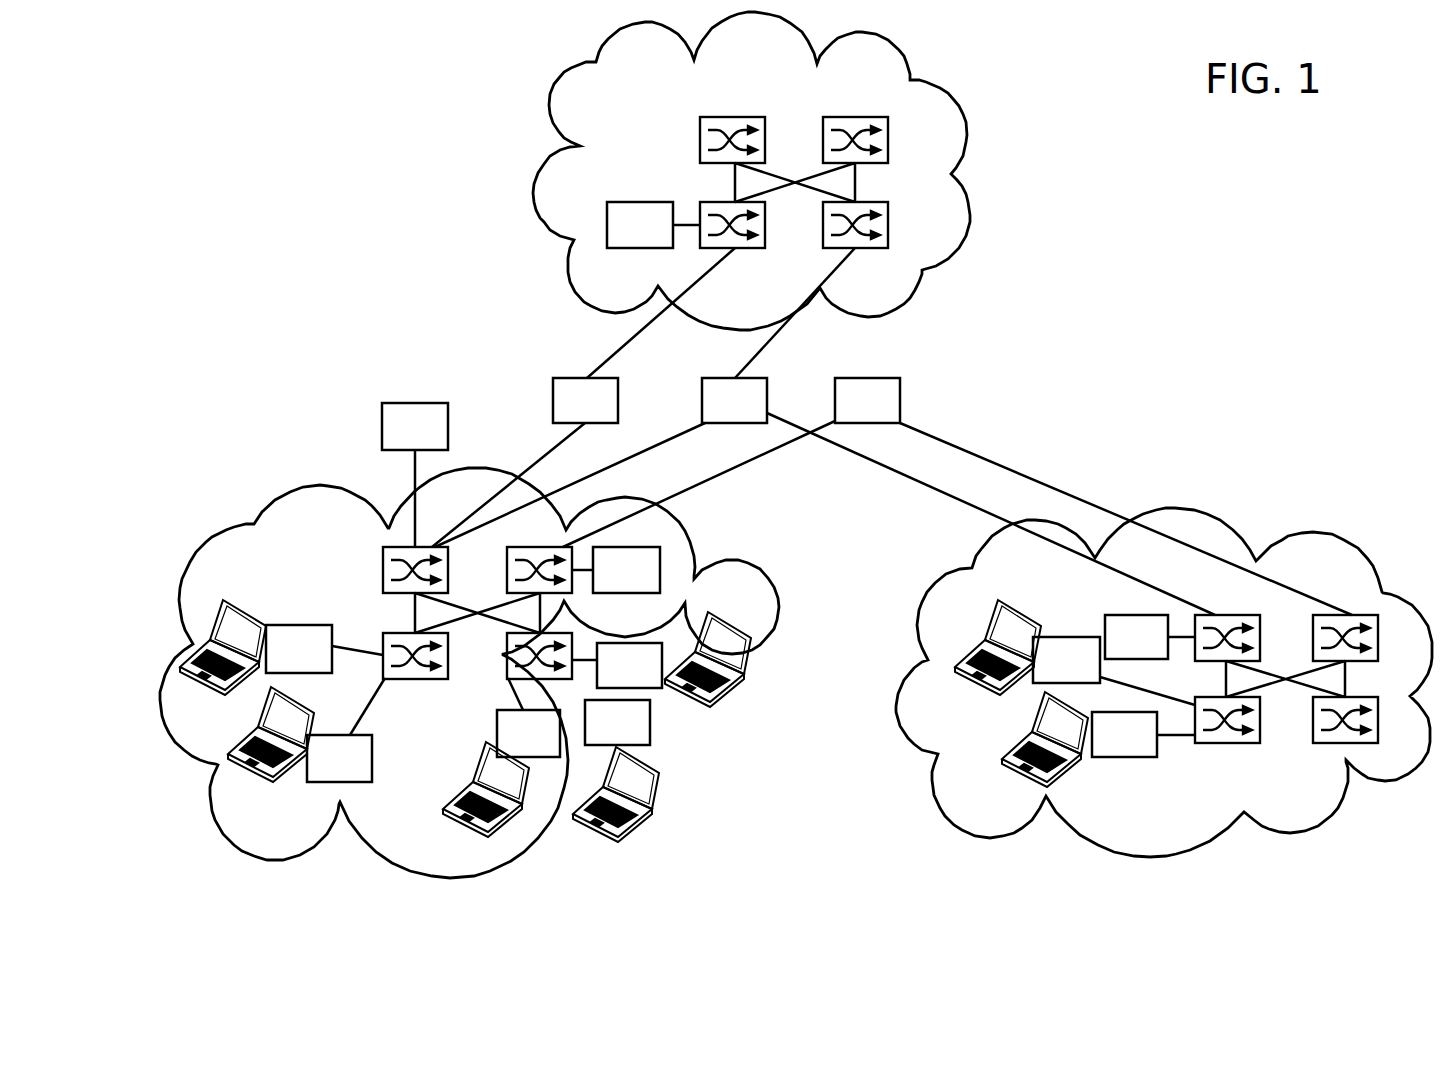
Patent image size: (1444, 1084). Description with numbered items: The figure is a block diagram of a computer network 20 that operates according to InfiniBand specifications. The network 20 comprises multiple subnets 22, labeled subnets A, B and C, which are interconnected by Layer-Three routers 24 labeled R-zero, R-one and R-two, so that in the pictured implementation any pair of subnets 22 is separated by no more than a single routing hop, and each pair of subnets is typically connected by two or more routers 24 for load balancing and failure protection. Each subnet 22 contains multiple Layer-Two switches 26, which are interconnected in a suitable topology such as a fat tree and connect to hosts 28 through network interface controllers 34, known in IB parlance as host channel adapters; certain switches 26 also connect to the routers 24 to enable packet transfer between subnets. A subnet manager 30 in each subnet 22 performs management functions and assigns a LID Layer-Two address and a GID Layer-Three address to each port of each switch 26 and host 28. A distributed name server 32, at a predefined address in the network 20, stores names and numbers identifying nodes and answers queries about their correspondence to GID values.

The computer network 20 is at (245, 117).
The subnet 22 is at (533, 193).
The router 24 is at (553, 390).
The switch 26 is at (888, 135).
The host 28 is at (240, 760).
The subnet manager 30 is at (660, 571).
The distributed name server 32 is at (382, 428).
The network interface controller 34 is at (332, 625).